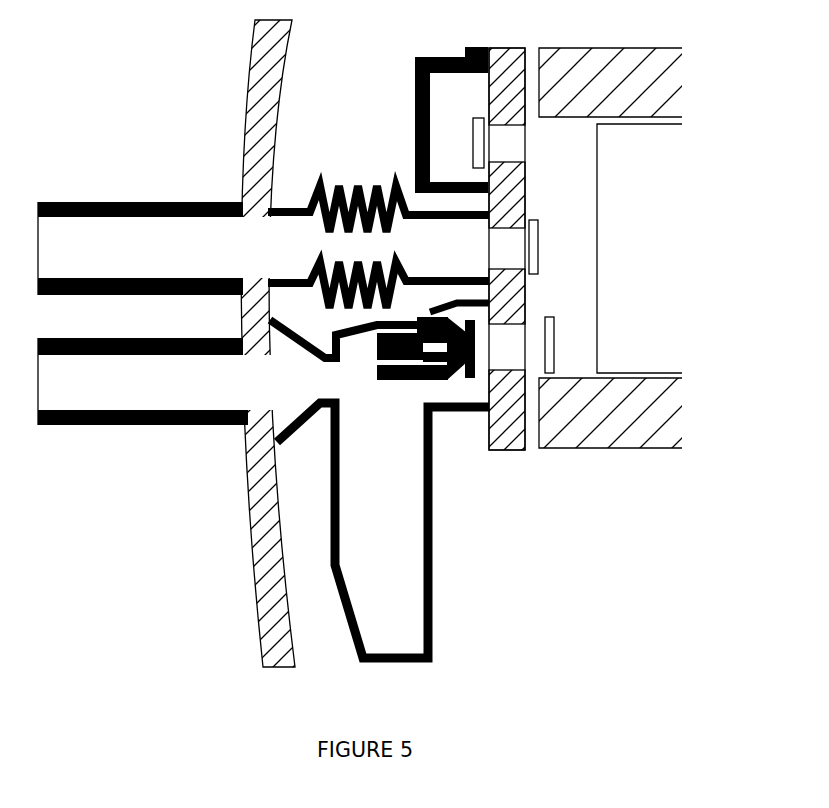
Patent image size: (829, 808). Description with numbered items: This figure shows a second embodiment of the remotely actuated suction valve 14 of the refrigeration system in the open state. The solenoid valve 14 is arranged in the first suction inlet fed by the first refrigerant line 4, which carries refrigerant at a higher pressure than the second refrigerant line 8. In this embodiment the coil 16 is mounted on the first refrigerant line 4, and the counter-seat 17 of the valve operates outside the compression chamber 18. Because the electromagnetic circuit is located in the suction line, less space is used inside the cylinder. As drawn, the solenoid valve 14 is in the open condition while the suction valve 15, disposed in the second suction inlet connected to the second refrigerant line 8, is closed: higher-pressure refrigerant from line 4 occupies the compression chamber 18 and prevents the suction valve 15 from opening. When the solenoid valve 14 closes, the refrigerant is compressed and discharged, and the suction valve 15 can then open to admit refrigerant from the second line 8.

The first refrigerant line 4 is at (80, 425).
The second refrigerant line 8 is at (92, 200).
The remotely actuated suction valve 14 is at (380, 347).
The suction valve 15 is at (540, 245).
The coil 16 is at (395, 382).
The counter-seat 17 is at (470, 380).
The compression chamber 18 is at (555, 338).